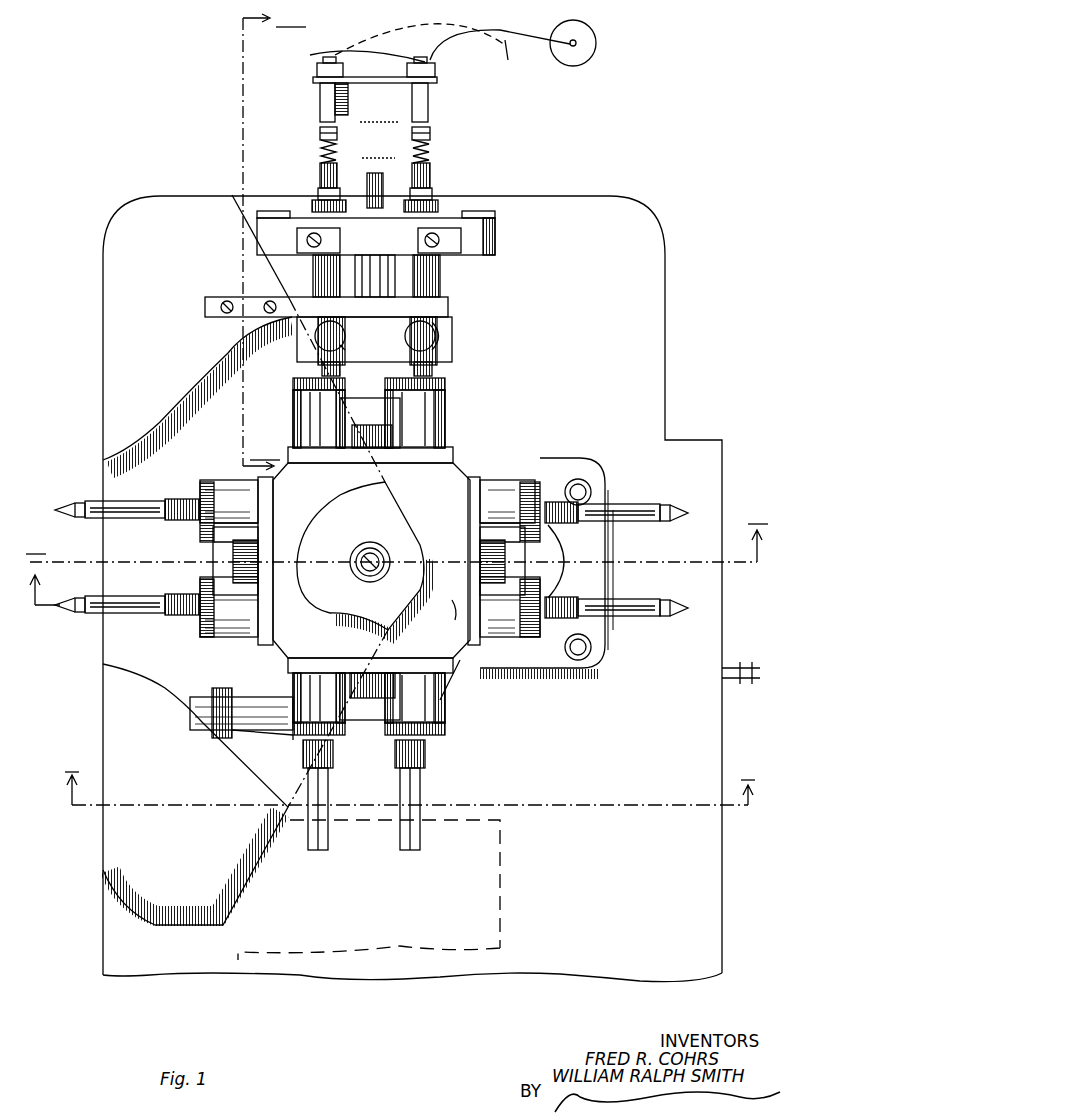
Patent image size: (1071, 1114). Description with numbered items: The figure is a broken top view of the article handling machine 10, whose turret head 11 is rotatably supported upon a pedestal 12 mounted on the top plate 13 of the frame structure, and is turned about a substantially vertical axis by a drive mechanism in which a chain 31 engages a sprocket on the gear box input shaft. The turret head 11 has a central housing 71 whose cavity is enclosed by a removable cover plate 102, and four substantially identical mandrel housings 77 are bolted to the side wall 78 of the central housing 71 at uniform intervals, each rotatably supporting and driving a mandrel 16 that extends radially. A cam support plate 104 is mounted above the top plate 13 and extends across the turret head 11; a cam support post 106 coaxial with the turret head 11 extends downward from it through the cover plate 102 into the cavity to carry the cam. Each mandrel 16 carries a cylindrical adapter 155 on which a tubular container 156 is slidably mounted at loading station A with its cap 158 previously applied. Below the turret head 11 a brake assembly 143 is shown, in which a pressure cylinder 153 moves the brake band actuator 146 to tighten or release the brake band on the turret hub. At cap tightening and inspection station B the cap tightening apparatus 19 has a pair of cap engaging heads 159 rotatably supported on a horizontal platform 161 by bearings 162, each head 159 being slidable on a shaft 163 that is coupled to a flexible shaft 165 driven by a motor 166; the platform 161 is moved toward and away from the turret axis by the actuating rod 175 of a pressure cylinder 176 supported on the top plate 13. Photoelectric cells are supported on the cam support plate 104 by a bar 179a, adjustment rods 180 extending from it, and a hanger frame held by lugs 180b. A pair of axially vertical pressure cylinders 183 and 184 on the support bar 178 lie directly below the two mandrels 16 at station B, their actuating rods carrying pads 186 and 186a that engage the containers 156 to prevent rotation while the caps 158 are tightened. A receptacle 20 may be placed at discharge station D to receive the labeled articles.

The article handling machine 10 is at (410, 508).
The turret head 11 is at (481, 438).
The pedestal 12 is at (582, 576).
The top plate 13 is at (705, 456).
The mandrel 16 is at (200, 500).
The cap tightening apparatus 19 is at (456, 116).
The receptacle 20 is at (505, 862).
The chain 31 is at (748, 663).
The central housing 71 is at (455, 655).
The mandrel housing 77 is at (478, 478).
The side wall 78 is at (468, 603).
The cover plate 102 is at (405, 510).
The cam support plate 104 is at (125, 370).
The cam support post 106 is at (352, 552).
The block 143 is at (488, 709).
The brake band actuator 146 is at (462, 722).
The pressure cylinder 153 is at (290, 700).
The cylindrical adapter 155 is at (320, 850).
The tubular container 156 is at (150, 517).
The cap 158 is at (68, 596).
The cap engaging head 159 is at (336, 208).
The platform 161 is at (400, 108).
The bearing 162 is at (320, 95).
The shaft 163 is at (320, 128).
The flexible shaft 165 is at (432, 50).
The motor 166 is at (582, 38).
The actuating rod 175 is at (408, 208).
The pressure cylinder 176 is at (392, 240).
The support bar 178 is at (445, 352).
The bar 179a is at (232, 298).
The adjustment rod 180 is at (478, 230).
The lug 180b is at (320, 238).
The pressure cylinder 183 is at (345, 345).
The pressure cylinder 184 is at (437, 333).
The pad 186 is at (345, 338).
The pad 186a is at (408, 333).